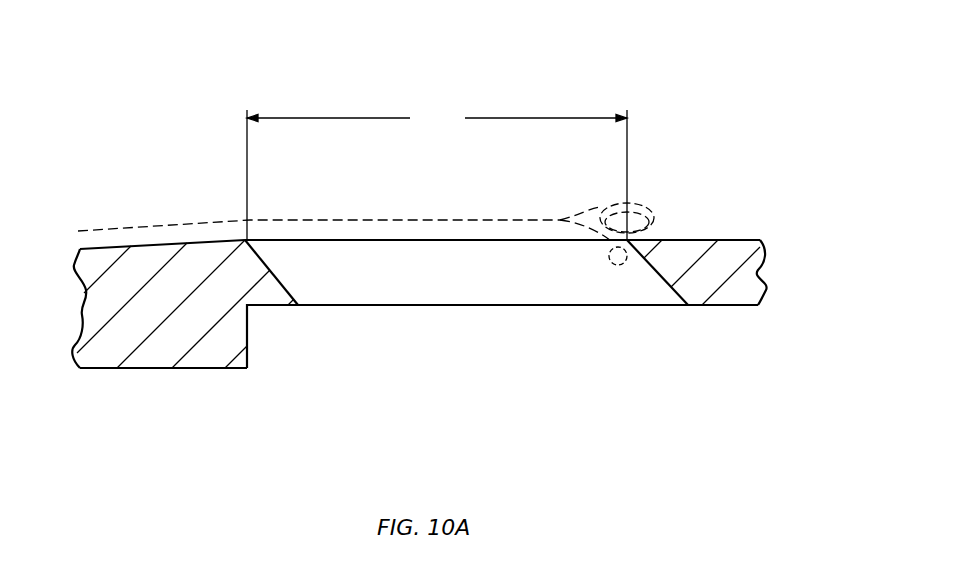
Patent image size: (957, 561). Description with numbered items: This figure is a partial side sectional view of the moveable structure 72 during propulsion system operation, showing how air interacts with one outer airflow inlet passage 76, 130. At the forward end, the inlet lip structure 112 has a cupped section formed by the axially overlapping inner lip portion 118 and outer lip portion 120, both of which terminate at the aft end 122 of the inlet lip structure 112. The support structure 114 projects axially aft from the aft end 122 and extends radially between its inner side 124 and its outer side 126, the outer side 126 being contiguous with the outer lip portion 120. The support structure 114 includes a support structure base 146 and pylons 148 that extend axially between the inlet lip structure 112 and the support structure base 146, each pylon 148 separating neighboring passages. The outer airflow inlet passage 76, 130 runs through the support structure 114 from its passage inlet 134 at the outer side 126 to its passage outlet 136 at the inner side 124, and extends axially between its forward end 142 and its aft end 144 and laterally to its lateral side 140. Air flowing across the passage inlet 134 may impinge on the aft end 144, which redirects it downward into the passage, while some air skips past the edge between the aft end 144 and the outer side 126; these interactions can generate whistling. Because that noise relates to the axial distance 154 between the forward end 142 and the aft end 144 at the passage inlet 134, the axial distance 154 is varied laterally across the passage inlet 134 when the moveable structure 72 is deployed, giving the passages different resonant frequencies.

The moveable structure 72 is at (448, 252).
The outer airflow inlet passage 76 is at (466, 276).
The plate portion 130 is at (400, 270).
The inlet lip structure 112 is at (120, 397).
The support structure 114 is at (696, 198).
The inner lip portion 118 is at (93, 370).
The outer lip portion 120 is at (140, 247).
The aft end of the inlet lip structure 122 is at (247, 343).
The inner side of the support structure 124 is at (733, 307).
The outer side of the support structure 126 is at (747, 240).
The passage inlet 134 is at (458, 239).
The passage outlet 136 is at (470, 308).
The lateral side of the outer airflow inlet passage 140 is at (368, 290).
The forward end of the outer airflow inlet passage 142 is at (290, 300).
The aft end of the outer airflow inlet passage 144 is at (643, 306).
The support structure base 146 is at (720, 243).
The pylon 148 is at (562, 308).
The axial distance 154 is at (437, 174).